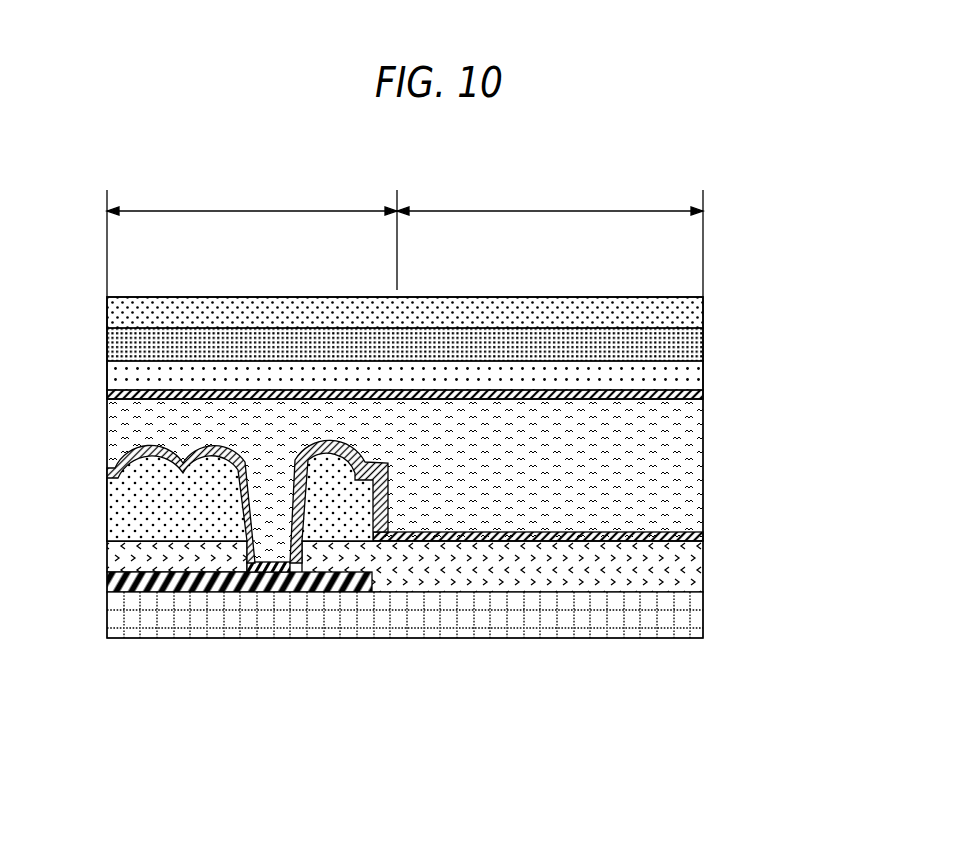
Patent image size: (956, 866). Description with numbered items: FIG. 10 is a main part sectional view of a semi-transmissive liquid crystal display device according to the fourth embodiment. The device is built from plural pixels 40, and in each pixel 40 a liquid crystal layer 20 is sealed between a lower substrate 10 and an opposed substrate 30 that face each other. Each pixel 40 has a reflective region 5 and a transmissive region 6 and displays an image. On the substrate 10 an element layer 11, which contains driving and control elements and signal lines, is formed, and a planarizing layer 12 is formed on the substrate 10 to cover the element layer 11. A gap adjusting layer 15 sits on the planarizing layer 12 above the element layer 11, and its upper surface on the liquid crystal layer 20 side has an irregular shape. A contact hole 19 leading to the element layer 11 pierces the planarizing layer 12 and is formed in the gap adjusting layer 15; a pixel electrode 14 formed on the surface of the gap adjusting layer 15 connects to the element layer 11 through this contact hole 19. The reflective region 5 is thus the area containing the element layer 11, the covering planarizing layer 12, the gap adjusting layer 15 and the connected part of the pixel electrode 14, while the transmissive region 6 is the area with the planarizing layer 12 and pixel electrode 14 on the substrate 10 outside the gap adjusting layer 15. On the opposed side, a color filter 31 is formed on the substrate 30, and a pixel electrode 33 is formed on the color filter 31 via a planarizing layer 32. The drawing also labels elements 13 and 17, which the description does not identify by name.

The reflective region 5 is at (252, 238).
The transmissive region 6 is at (550, 238).
The substrate 10 is at (683, 617).
The element layer 11 is at (172, 592).
The planarizing layer 12 is at (670, 562).
The contact electrode 13 is at (263, 543).
The pixel electrode 14 is at (667, 530).
The gap adjusting layer 15 is at (157, 500).
The counter electrode 17 is at (203, 462).
The contact hole 19 is at (278, 502).
The liquid crystal layer 20 is at (660, 452).
The substrate 30 is at (678, 317).
The color filter 31 is at (678, 347).
The planarizing layer 32 is at (678, 370).
The pixel electrode 33 is at (703, 398).
The pixel 40 is at (706, 291).